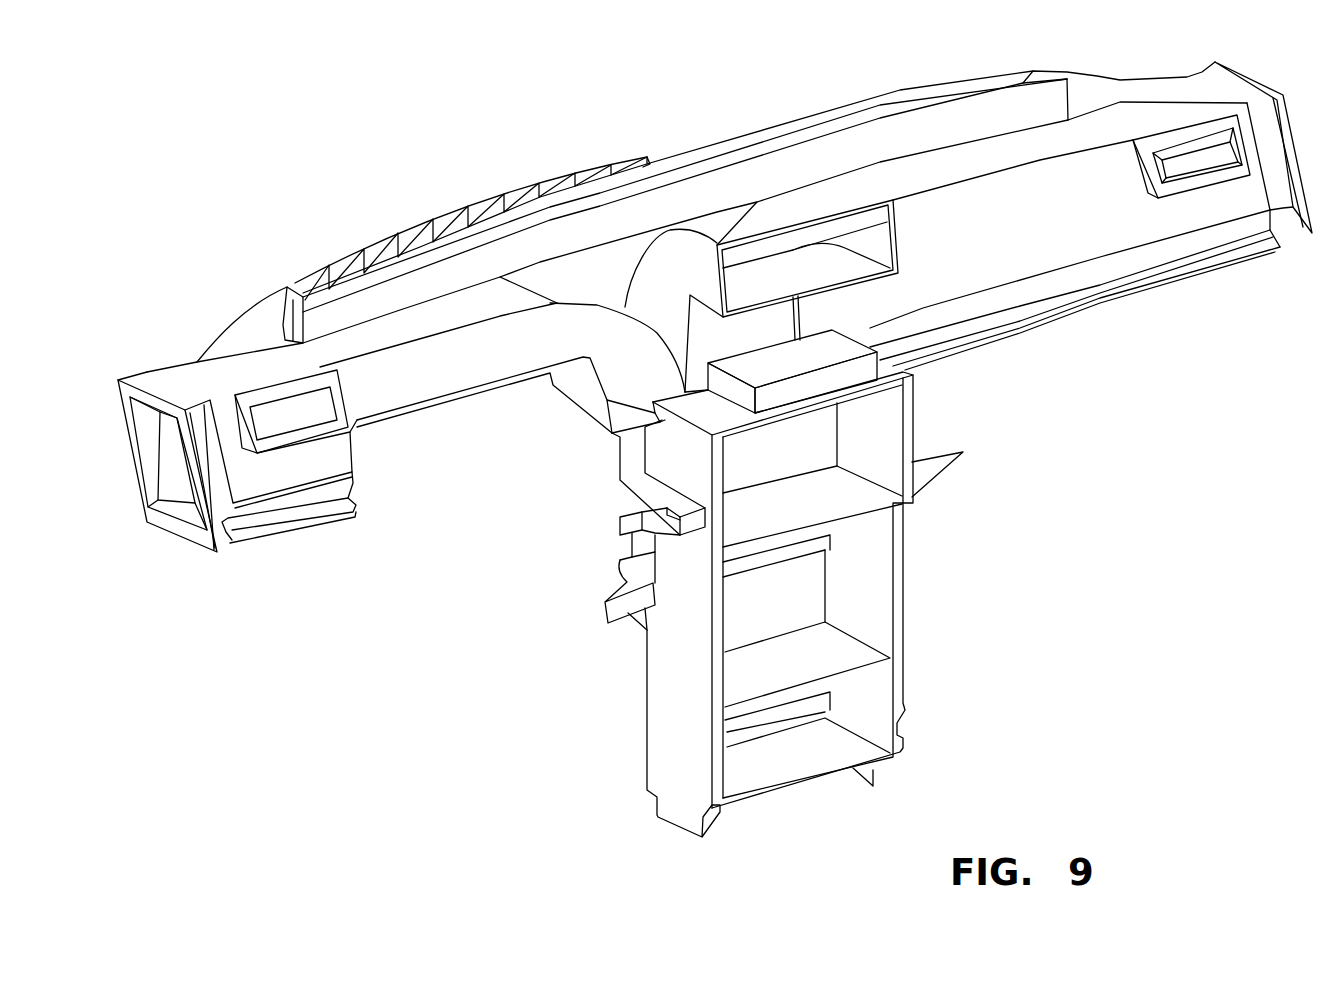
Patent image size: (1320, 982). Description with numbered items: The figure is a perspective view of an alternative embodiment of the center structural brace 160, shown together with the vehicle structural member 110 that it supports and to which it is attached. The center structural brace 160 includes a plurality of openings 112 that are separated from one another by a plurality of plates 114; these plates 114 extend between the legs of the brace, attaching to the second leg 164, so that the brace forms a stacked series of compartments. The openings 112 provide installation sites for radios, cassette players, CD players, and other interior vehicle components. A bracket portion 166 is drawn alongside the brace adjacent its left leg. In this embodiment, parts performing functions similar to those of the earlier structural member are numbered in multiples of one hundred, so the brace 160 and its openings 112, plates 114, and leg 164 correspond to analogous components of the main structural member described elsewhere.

The instrument panel 110 is at (612, 144).
The openings 112 is at (817, 438).
The plates 114 is at (845, 495).
The center structural brace 160 is at (855, 569).
The second leg 164 is at (905, 710).
The support bracket 166 is at (652, 694).